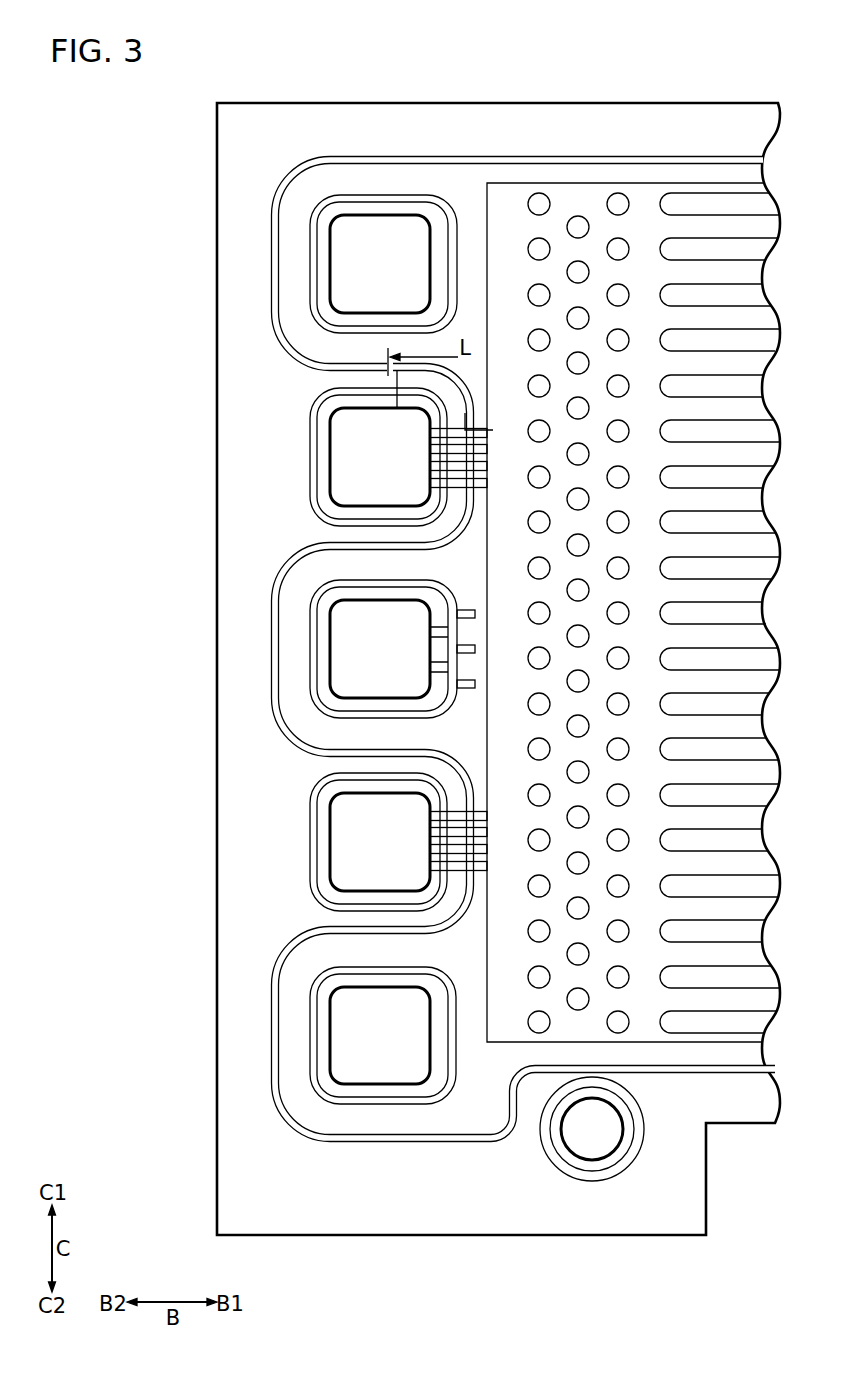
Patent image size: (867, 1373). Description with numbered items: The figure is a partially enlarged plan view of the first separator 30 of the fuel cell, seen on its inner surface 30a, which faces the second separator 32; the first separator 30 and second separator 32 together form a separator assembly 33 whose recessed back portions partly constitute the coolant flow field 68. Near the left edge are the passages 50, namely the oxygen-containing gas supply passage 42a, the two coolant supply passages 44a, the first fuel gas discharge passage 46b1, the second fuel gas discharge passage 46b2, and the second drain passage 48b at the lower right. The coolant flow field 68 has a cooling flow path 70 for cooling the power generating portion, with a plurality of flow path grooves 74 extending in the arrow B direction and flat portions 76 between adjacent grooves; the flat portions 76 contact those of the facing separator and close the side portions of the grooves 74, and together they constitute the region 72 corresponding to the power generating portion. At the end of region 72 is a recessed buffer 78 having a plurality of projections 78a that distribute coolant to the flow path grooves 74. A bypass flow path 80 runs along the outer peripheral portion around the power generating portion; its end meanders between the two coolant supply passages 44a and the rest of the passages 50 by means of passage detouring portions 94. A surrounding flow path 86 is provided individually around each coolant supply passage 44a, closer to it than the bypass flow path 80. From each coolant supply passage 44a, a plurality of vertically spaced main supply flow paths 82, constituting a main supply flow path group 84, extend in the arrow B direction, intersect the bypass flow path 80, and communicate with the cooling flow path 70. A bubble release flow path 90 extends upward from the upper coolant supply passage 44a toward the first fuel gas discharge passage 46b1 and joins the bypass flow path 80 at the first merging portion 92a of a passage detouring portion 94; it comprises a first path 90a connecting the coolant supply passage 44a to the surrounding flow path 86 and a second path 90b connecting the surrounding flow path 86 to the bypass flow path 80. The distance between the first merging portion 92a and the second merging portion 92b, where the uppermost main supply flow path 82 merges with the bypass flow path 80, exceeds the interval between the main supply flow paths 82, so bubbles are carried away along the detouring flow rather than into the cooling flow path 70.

The first separator 30 is at (230, 100).
The inner surface 30a is at (409, 125).
The second separator 32 is at (297, 100).
The wiring board 33 is at (208, 50).
The oxygen-containing gas supply passage 42a is at (350, 650).
The coolant supply passage 44a is at (345, 455).
The first fuel gas discharge passage 46b1 is at (345, 240).
The second fuel gas discharge passage 46b2 is at (350, 1025).
The second drain passage 48b is at (592, 1150).
The passages 50 is at (349, 745).
The coolant flow field 68 is at (266, 169).
The cooling flow path for cooling the power generating portion 70 is at (588, 175).
The region corresponding to the power generating portion 72 is at (647, 58).
The flow path grooves 74 is at (678, 203).
The flat portions 76 is at (727, 207).
The buffer 78 is at (510, 203).
The projections 78a is at (540, 203).
The bypass flow path 80 is at (366, 155).
The main supply flow paths 82 is at (487, 483).
The main supply flow path group 84 is at (422, 650).
The surrounding flow path 86 is at (313, 427).
The bubble release flow path 90 is at (150, 337).
The first path 90a is at (397, 402).
The second path 90b is at (385, 377).
The first merging portion 92a is at (385, 377).
The second merging portion 92b is at (481, 426).
The passage detouring portion 94 is at (277, 207).